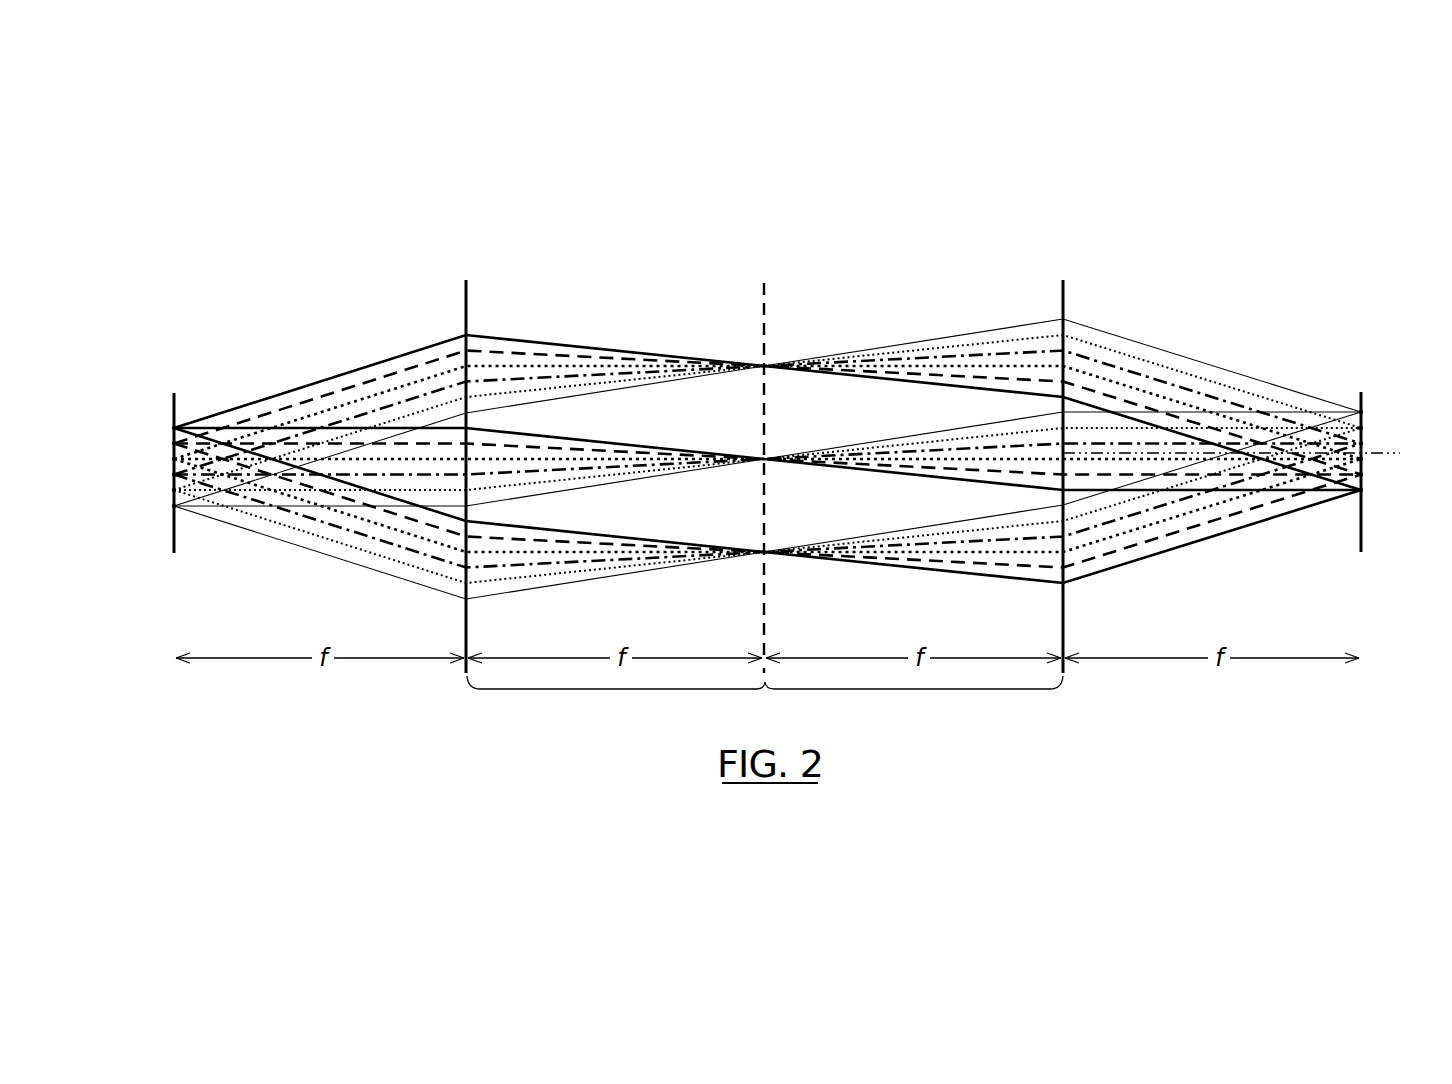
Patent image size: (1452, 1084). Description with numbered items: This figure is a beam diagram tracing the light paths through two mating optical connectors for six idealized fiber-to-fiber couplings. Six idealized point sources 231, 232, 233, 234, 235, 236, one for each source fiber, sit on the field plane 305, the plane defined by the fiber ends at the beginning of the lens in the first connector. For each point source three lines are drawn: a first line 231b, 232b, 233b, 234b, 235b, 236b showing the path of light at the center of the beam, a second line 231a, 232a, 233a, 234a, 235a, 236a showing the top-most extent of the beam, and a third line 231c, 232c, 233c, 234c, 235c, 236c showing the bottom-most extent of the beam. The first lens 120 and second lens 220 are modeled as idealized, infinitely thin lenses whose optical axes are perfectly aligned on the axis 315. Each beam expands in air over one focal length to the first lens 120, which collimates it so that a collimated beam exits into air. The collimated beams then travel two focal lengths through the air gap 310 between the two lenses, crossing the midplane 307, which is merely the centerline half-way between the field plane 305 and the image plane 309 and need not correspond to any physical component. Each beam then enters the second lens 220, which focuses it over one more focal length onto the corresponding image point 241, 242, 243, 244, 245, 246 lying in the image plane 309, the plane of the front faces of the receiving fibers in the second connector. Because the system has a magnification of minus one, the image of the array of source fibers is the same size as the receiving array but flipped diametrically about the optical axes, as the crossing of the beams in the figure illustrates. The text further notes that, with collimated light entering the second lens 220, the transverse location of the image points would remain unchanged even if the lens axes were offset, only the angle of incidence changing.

The first lens 120 is at (463, 302).
The second lens 220 is at (1060, 302).
The field plane 305 is at (177, 412).
The midplane 307 is at (760, 302).
The image plane 309 is at (1359, 400).
The air gap 310 is at (765, 699).
The axis 315 is at (1398, 453).
The point source 231 is at (172, 428).
The point source 232 is at (172, 444).
The point source 233 is at (172, 459).
The point source 234 is at (172, 474).
The point source 235 is at (172, 490).
The point source 236 is at (172, 506).
The second line 231a is at (322, 381).
The first line 231b is at (660, 448).
The third line 231c is at (637, 539).
The second line 232a is at (340, 390).
The first line 232b is at (627, 452).
The third line 232c is at (637, 546).
The second line 233a is at (370, 395).
The first line 233b is at (568, 458).
The third line 233c is at (618, 553).
The second line 234a is at (408, 400).
The first line 234b is at (502, 473).
The third line 234c is at (585, 561).
The second line 235a is at (503, 393).
The first line 235b is at (570, 479).
The third line 235c is at (545, 575).
The second line 236a is at (540, 401).
The first line 236b is at (655, 476).
The third line 236c is at (505, 593).
The image point 241 is at (1363, 490).
The image point 242 is at (1363, 474).
The image point 243 is at (1363, 459).
The image point 244 is at (1363, 444).
The image point 245 is at (1363, 428).
The image point 246 is at (1363, 413).